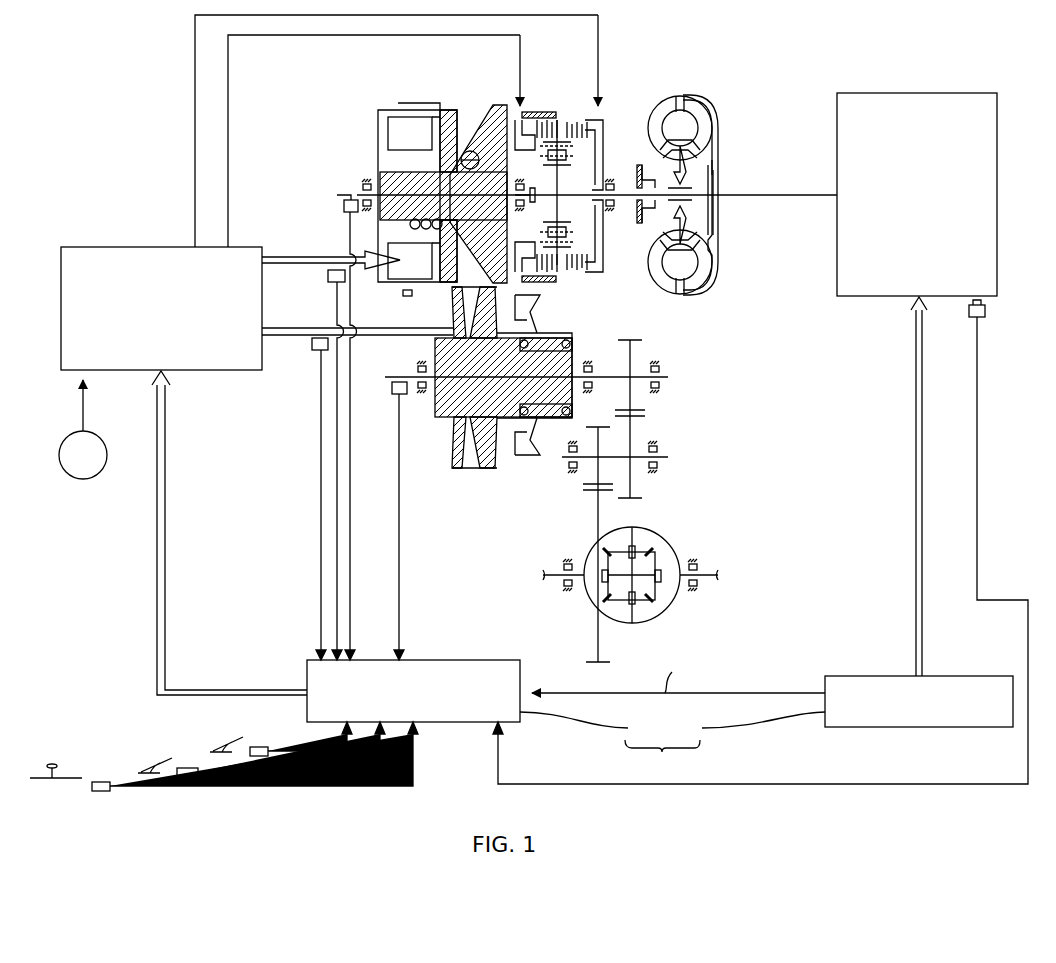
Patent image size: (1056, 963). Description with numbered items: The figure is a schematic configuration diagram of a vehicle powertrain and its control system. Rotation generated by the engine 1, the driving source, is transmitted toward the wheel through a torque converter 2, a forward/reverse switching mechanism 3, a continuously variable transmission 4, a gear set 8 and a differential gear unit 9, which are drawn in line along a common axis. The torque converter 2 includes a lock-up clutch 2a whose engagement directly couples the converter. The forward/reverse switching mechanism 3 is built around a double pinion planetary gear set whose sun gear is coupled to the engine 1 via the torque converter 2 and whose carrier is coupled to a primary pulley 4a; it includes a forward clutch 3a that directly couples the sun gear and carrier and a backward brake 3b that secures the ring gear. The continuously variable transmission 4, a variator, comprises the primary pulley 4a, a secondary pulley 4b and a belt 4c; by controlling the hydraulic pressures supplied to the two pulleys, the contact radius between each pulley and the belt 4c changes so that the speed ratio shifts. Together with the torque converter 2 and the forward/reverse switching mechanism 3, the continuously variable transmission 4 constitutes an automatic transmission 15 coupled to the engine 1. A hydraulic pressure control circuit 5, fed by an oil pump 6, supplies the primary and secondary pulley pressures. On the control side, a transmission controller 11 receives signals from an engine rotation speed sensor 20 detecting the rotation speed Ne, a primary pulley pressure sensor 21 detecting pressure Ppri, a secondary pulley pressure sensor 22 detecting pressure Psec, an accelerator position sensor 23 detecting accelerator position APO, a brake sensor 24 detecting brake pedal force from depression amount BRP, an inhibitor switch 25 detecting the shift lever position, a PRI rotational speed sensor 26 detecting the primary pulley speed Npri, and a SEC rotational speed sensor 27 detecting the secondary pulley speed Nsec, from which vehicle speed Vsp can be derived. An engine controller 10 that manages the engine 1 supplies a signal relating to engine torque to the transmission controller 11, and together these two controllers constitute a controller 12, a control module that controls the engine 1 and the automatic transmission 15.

The engine 1 is at (963, 93).
The torque converter 2 is at (681, 90).
The lock-up clutch 2a is at (712, 170).
The forward/reverse switching mechanism 3 is at (527, 106).
The forward clutch 3a is at (589, 120).
The backward brake 3b is at (552, 118).
The continuously variable transmission 4 is at (350, 126).
The primary pulley 4a is at (392, 102).
The secondary pulley 4b is at (532, 466).
The belt 4c is at (470, 150).
The hydraulic pressure control circuit 5 is at (136, 247).
The oil pump 6 is at (83, 479).
The gear set 8 is at (675, 404).
The differential gear unit 9 is at (674, 530).
The engine controller 10 is at (772, 520).
The transmission controller 11 is at (566, 702).
The controller 12 is at (662, 758).
The automatic transmission 15 is at (745, 68).
The engine rotation speed sensor 20 is at (985, 312).
The primary pulley pressure sensor 21 is at (328, 277).
The secondary pulley pressure sensor 22 is at (316, 352).
The accelerator position sensor 23 is at (259, 747).
The brake sensor 24 is at (188, 768).
The inhibitor switch 25 is at (101, 782).
The PRI rotational speed sensor 26 is at (343, 204).
The SEC rotational speed sensor 27 is at (397, 395).